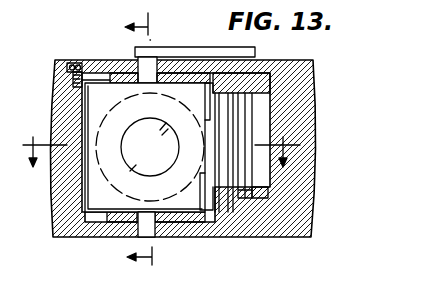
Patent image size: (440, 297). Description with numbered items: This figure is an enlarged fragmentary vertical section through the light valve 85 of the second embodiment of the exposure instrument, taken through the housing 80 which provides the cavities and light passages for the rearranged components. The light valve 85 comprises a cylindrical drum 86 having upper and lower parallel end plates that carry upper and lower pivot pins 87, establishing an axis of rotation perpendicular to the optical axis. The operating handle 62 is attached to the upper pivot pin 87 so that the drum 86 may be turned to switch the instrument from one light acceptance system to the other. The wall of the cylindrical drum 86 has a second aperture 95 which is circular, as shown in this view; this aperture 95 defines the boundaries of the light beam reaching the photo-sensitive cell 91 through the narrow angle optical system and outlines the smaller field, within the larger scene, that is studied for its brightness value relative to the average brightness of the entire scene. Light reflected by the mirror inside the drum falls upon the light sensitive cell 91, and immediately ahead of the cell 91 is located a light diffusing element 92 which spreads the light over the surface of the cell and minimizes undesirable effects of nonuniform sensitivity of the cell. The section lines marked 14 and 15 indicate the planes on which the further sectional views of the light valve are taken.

The housing 80 is at (301, 242).
The operating handle 62 is at (192, 46).
The light valve 85 is at (200, 214).
The cylindrical drum 86 is at (100, 197).
The circular aperture 95 is at (132, 133).
The pivot pin 87 is at (151, 232).
The light sensitive cell 91 is at (264, 118).
The light diffusing element 92 is at (238, 180).
The section line 14 is at (124, 137).
The section line 15 is at (155, 168).